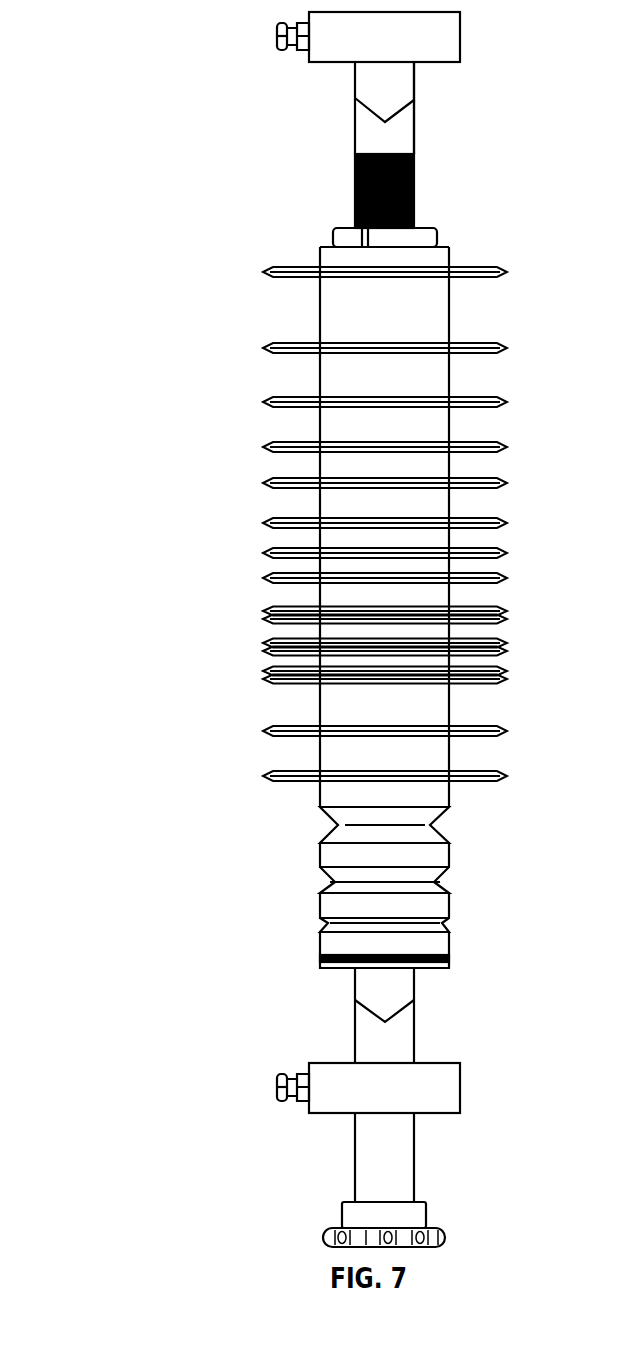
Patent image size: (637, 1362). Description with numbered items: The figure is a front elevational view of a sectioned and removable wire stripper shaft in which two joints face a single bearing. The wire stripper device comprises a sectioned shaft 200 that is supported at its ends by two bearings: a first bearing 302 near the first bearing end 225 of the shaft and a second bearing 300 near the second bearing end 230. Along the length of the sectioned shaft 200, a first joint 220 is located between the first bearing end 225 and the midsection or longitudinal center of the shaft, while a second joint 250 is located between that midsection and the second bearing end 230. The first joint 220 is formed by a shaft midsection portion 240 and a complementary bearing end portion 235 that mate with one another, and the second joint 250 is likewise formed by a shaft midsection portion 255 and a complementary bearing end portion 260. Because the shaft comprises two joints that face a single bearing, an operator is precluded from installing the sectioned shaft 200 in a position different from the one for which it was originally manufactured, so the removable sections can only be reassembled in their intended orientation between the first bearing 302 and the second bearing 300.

The sectioned shaft 200 is at (122, 485).
The second bearing 300 is at (406, 46).
The first bearing 302 is at (404, 1103).
The second bearing end 230 is at (355, 63).
The second joint 250 is at (357, 98).
The complementary bearing end portion 260 is at (397, 75).
The shaft midsection portion 255 is at (402, 130).
The first joint 220 is at (357, 1000).
The shaft midsection portion 240 is at (397, 985).
The complementary bearing end portion 235 is at (400, 1037).
The first bearing end 225 is at (416, 1198).